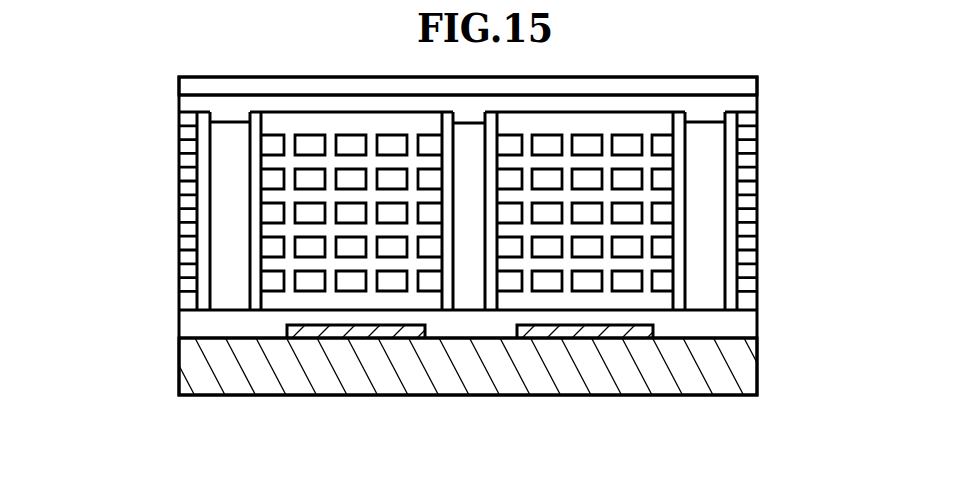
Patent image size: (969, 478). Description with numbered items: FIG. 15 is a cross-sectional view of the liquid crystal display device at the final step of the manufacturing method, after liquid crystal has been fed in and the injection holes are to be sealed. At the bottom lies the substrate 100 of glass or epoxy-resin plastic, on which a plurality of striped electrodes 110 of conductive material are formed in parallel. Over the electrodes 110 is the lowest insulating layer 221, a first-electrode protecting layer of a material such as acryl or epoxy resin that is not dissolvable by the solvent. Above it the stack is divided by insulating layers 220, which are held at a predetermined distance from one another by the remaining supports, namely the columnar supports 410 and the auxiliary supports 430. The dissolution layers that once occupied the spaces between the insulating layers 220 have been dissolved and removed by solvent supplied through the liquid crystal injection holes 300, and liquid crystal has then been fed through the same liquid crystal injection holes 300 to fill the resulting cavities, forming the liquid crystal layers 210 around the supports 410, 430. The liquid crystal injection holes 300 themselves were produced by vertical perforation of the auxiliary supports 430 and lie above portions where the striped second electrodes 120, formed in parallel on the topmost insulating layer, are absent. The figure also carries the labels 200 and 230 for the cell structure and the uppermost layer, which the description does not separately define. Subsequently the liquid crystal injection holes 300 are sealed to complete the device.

The substrate 100 is at (743, 363).
The electrodes 110 is at (348, 338).
The second electrodes 120 is at (187, 88).
The cell structure 200 is at (658, 143).
The liquid crystal layers 210 is at (307, 140).
The insulating layer 220 is at (655, 122).
The lowest insulating layer 221 is at (745, 318).
The top layer 230 is at (740, 97).
The liquid crystal injection holes 300 is at (245, 229).
The columnar supports 410 is at (647, 178).
The auxiliary supports 430 is at (195, 142).